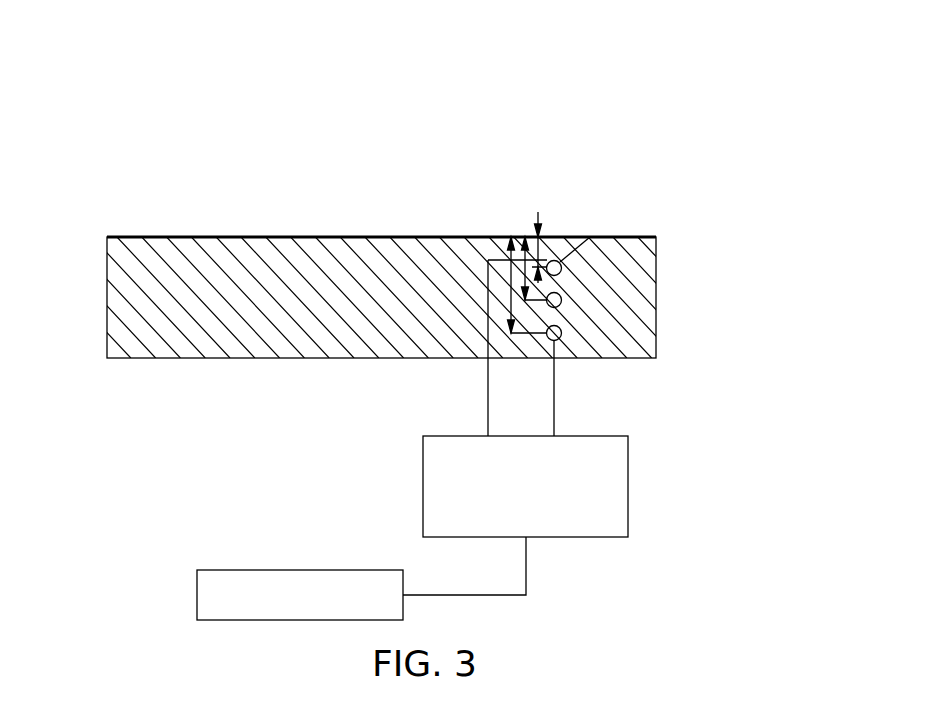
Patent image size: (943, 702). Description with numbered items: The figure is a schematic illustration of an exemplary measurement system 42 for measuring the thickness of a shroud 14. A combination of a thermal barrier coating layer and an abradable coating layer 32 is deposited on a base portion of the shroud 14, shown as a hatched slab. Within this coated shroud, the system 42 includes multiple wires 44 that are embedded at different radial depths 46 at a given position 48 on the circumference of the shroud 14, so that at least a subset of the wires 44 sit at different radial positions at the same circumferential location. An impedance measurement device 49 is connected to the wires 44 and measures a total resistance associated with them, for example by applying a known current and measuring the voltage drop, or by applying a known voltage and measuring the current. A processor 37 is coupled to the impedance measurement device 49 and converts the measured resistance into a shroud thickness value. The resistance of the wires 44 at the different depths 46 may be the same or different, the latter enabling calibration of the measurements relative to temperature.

The shroud 14 is at (304, 237).
The thermal barrier coating and abradable coating layers 32 is at (112, 296).
The processor 37 is at (262, 568).
The measurement system 42 is at (702, 85).
The wires 44 is at (600, 252).
The radial depths 46 is at (512, 236).
The given position 48 is at (556, 410).
The impedance measurement device 49 is at (630, 485).